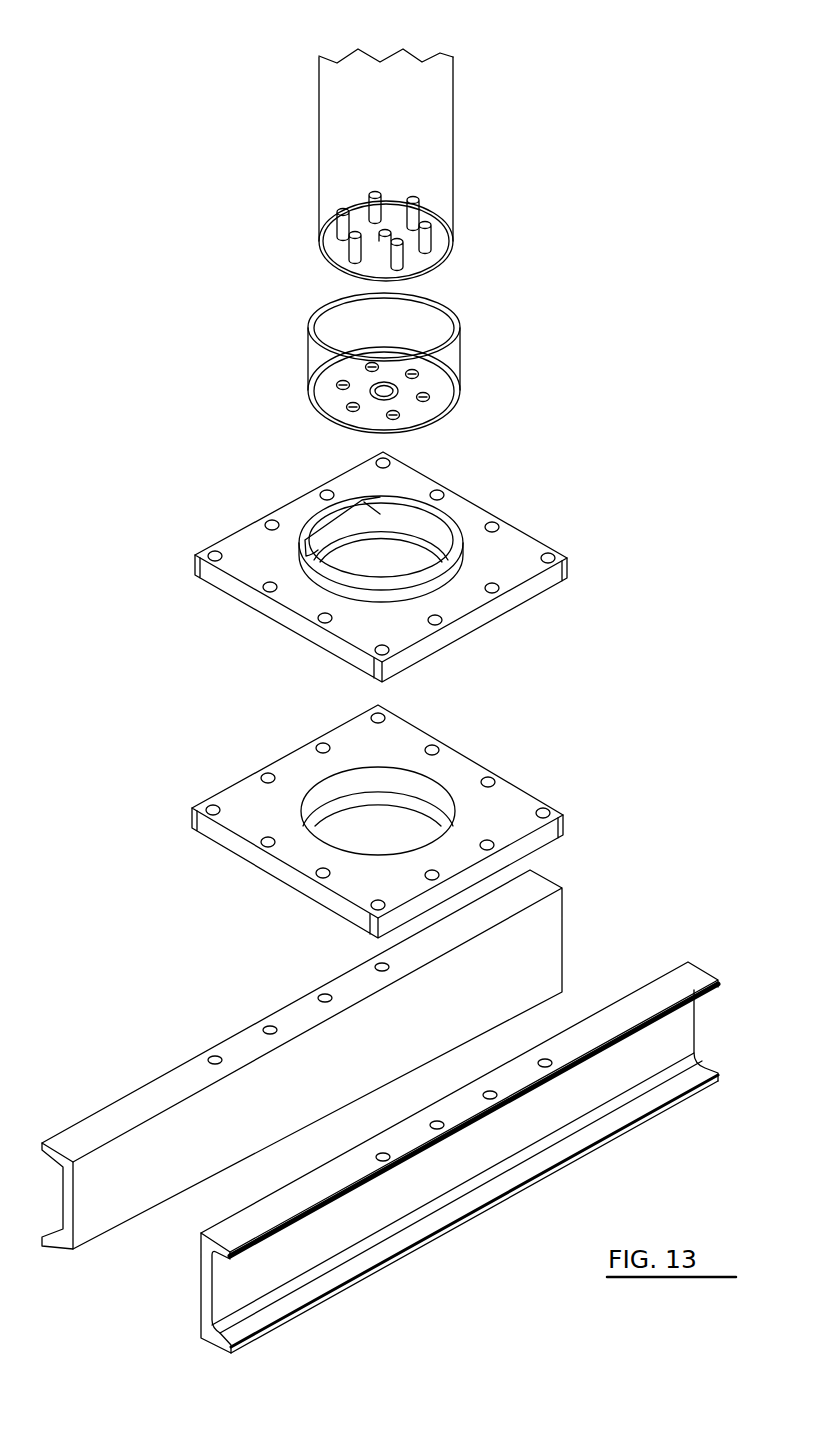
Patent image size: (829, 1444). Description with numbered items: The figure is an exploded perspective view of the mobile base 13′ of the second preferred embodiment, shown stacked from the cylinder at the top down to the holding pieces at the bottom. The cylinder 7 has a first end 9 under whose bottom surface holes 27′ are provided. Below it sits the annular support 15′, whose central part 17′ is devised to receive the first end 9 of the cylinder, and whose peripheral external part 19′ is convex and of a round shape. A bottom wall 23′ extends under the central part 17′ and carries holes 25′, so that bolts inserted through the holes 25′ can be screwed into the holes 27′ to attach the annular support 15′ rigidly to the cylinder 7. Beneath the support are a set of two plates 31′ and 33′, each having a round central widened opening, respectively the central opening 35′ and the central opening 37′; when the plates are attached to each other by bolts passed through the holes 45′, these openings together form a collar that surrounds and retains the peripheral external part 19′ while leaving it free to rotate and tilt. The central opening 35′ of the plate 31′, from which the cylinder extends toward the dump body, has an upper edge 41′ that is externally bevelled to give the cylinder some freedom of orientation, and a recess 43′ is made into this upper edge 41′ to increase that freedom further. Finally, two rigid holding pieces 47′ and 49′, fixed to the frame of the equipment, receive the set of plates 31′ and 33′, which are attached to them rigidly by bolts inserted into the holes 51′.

The mobile base 13′ is at (653, 384).
The cylinder 7 is at (390, 165).
The first end of the cylinder 9 is at (455, 203).
The holes 27′ is at (352, 262).
The annular support 15′ is at (409, 354).
The central part 17′ is at (411, 326).
The peripheral external part 19′ is at (438, 395).
The bottom wall 23′ is at (390, 364).
The holes 25′ is at (388, 418).
The plate 31′ is at (384, 678).
The upper edge 41′ is at (384, 524).
The recess 43′ is at (335, 520).
The central opening 35′ is at (418, 536).
The holes 45′ is at (320, 621).
The plate 33′ is at (403, 821).
The central opening 37′ is at (401, 805).
The rigid holding piece 49′ is at (360, 1058).
The rigid holding piece 47′ is at (704, 970).
The holes 51′ is at (320, 996).